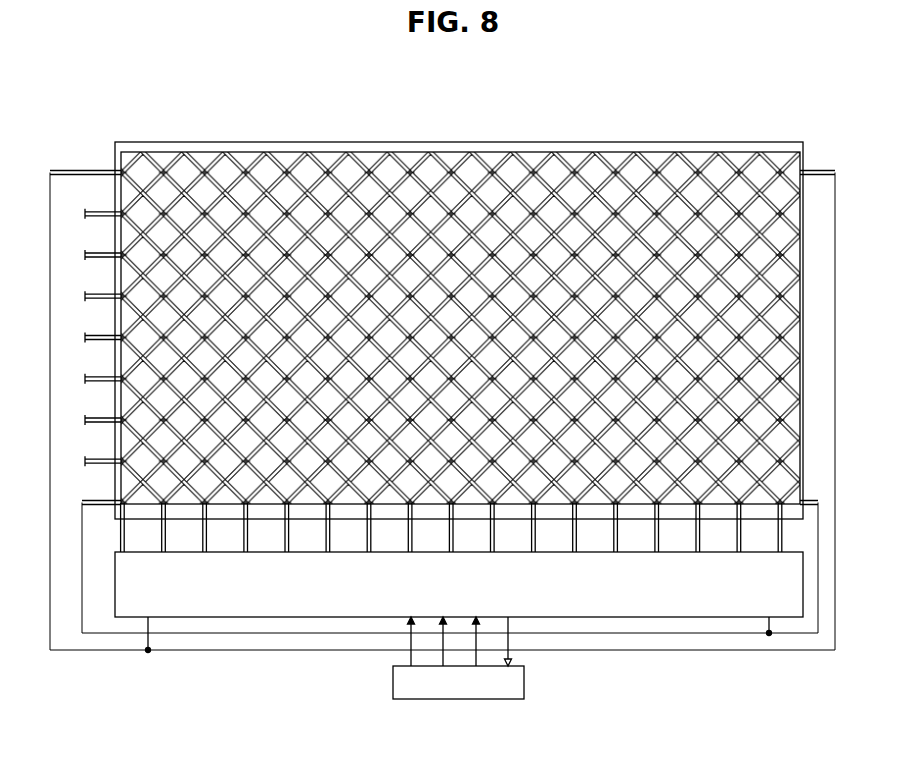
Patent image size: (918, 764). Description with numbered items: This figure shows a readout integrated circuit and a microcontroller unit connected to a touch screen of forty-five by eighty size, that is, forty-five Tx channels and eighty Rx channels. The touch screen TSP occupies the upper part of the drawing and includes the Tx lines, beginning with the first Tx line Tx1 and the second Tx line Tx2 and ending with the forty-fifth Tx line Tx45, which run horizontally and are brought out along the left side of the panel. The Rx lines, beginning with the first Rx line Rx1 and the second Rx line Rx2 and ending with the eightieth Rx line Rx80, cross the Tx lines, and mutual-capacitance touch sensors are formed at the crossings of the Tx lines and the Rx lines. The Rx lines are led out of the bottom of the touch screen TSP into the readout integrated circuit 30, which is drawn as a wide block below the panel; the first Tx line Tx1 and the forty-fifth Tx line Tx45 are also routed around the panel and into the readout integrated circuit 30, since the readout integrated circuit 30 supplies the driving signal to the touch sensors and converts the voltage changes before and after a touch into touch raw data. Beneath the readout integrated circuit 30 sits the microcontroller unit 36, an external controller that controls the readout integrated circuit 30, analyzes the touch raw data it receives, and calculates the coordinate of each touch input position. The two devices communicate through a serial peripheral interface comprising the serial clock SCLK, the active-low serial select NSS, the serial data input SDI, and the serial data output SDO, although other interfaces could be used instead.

The readout integrated circuit (ROIC) 30 is at (803, 583).
The microcontroller unit (MCU) 36 is at (525, 682).
The touch screen TSP is at (459, 142).
The Tx line Tx1 is at (442, 400).
The Tx line Tx2 is at (103, 203).
The Tx line Tx45 is at (449, 555).
The Rx line Rx1 is at (108, 527).
The Rx line Rx2 is at (150, 527).
The Rx line Rx80 is at (796, 527).
The SPI serial clock SCLK is at (402, 641).
The serial select (active low) NSS is at (435, 641).
The serial data input SDI is at (468, 641).
The serial data output SDO is at (500, 641).